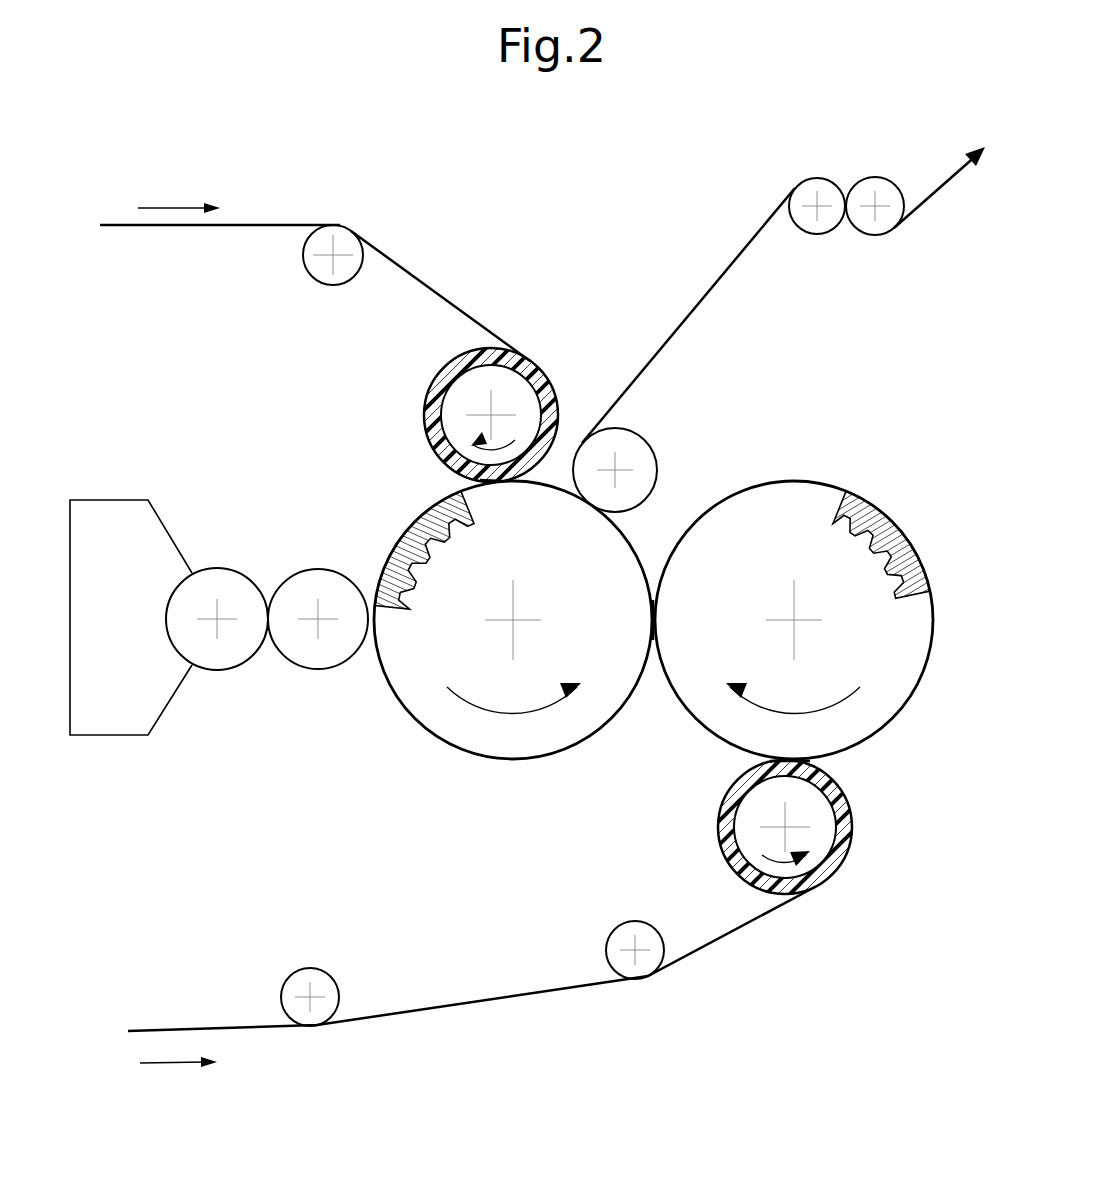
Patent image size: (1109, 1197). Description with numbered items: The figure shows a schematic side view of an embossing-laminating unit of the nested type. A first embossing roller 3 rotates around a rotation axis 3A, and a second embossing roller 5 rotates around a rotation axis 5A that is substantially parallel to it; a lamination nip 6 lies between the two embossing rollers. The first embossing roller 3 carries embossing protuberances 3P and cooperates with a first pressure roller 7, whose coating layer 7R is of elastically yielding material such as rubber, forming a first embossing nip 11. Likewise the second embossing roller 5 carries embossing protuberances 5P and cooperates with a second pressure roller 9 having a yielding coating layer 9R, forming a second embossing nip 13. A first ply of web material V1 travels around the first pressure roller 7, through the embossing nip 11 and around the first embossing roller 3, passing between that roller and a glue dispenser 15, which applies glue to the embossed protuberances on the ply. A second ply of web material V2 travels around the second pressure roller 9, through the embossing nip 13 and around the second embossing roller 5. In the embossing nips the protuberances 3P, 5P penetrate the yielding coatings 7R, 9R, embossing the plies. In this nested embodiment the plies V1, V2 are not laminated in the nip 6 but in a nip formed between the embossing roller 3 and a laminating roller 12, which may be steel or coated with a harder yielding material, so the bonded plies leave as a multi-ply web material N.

The first ply of web material V1 is at (111, 226).
The second ply of web material V2 is at (150, 1028).
The multi-ply web material N is at (956, 172).
The first pressure roller 7 is at (478, 385).
The coating layer of yielding material 7R is at (438, 412).
The first embossing nip 11 is at (450, 483).
The first embossing roller 3 is at (413, 697).
The rotation axis of the first embossing roller 3A is at (513, 620).
The embossing protuberances of the first embossing roller 3P is at (410, 535).
The laminating roller 12 is at (630, 448).
The second embossing roller 5 is at (806, 500).
The rotation axis of the second embossing roller 5A is at (794, 620).
The embossing protuberances of the second embossing roller 5P is at (877, 513).
The lamination nip 6 is at (654, 670).
The second pressure roller 9 is at (762, 808).
The coating layer of yielding material 9R is at (857, 826).
The second embossing nip 13 is at (823, 762).
The glue dispenser 15 is at (267, 668).